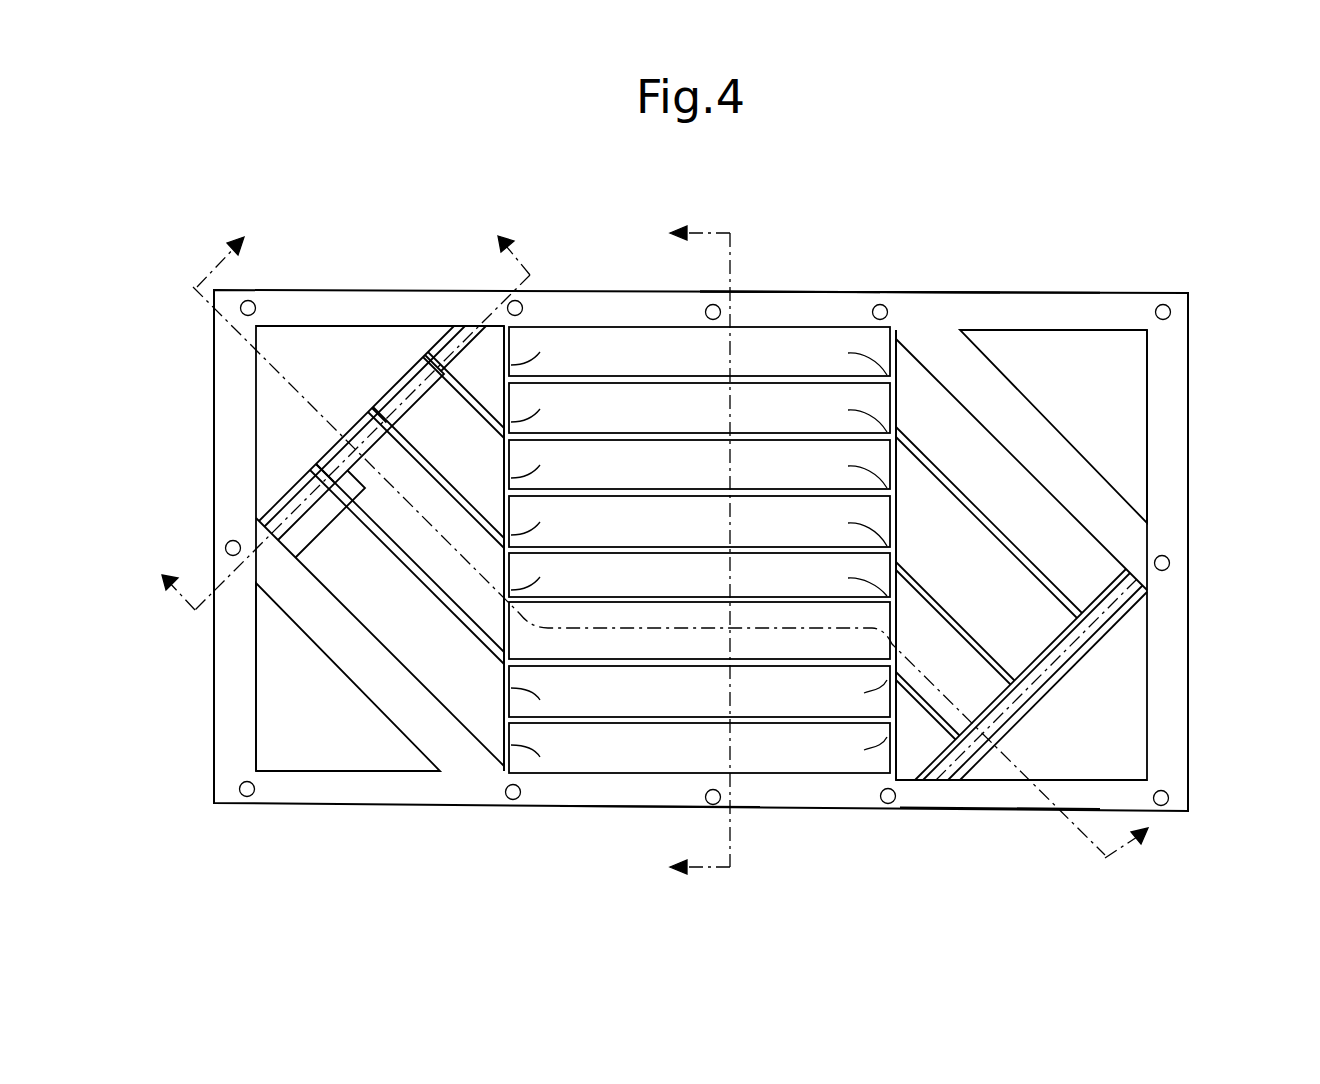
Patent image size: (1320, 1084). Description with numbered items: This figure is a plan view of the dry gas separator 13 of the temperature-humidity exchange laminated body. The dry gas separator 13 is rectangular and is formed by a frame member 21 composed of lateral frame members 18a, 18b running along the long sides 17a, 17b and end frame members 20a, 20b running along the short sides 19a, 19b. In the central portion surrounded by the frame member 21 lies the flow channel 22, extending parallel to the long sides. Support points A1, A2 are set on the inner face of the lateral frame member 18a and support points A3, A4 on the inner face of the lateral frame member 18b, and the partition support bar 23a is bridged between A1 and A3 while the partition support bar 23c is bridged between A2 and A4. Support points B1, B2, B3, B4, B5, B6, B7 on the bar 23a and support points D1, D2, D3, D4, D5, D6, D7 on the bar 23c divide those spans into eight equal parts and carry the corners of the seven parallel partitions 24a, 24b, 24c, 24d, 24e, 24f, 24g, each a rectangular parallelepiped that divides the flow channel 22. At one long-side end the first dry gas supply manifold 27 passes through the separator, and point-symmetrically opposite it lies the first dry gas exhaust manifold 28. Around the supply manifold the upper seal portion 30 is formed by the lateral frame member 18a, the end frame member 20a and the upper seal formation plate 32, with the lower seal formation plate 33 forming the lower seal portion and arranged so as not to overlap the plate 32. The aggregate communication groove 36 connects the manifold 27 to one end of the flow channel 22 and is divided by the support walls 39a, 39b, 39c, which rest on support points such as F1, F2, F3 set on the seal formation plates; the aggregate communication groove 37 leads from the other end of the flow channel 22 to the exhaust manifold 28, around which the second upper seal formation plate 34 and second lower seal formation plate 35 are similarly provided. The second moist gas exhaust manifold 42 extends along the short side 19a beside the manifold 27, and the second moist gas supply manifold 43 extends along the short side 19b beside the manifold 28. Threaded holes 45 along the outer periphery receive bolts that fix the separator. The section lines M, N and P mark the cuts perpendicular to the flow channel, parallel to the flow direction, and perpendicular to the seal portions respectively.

The dry gas separator 13 is at (748, 206).
The frame member 21 is at (903, 222).
The upper seal portion 30 is at (290, 300).
The first dry gas supply manifold 27 is at (312, 343).
The upper seal formation plate 32 is at (452, 328).
The aggregate communication groove 36 is at (292, 436).
The lower seal formation plate 33 is at (268, 505).
The long side 17a is at (745, 295).
The long side 17b is at (1005, 815).
The lateral frame member 18a is at (830, 318).
The lateral frame member 18b is at (633, 792).
The short side 19a is at (216, 352).
The short side 19b is at (1188, 443).
The end frame member 20a is at (228, 748).
The end frame member 20b is at (1165, 540).
The support point A1 is at (532, 322).
The support point A2 is at (893, 320).
The support point A3 is at (512, 795).
The support point A4 is at (888, 800).
The threaded holes 45 is at (1168, 305).
The second moist gas exhaust manifold 42 is at (342, 753).
The second moist gas supply manifold 43 is at (1132, 407).
The partition support bar 23a is at (500, 763).
The partition support bar 23c is at (885, 785).
The flow channel 22 is at (699, 602).
The partition 24a is at (695, 374).
The partition 24b is at (695, 431).
The partition 24c is at (695, 487).
The partition 24d is at (695, 544).
The partition 24e is at (695, 595).
The partition 24f is at (700, 672).
The partition 24g is at (700, 729).
The support wall 39a is at (472, 395).
The support wall 39b is at (408, 457).
The support wall 39c is at (428, 593).
The support point F1 is at (427, 348).
The support point F2 is at (378, 398).
The support point F3 is at (317, 495).
The first dry gas exhaust manifold 28 is at (1128, 738).
The second upper seal formation plate 34 is at (1132, 605).
The second lower seal formation plate 35 is at (1133, 572).
The aggregate communication groove 37 is at (1025, 642).
The support point B1 is at (541, 353).
The support point B2 is at (541, 410).
The support point B3 is at (541, 466).
The support point B4 is at (541, 523).
The support point B5 is at (541, 578).
The support point B6 is at (541, 693).
The support point B7 is at (541, 750).
The support point D1 is at (850, 357).
The support point D2 is at (850, 414).
The support point D3 is at (850, 470).
The support point D4 is at (850, 528).
The support point D5 is at (850, 580).
The support point D6 is at (858, 693).
The support point D7 is at (858, 750).
The line M- M is at (700, 550).
The line N- N is at (668, 560).
The line P- P is at (345, 420).